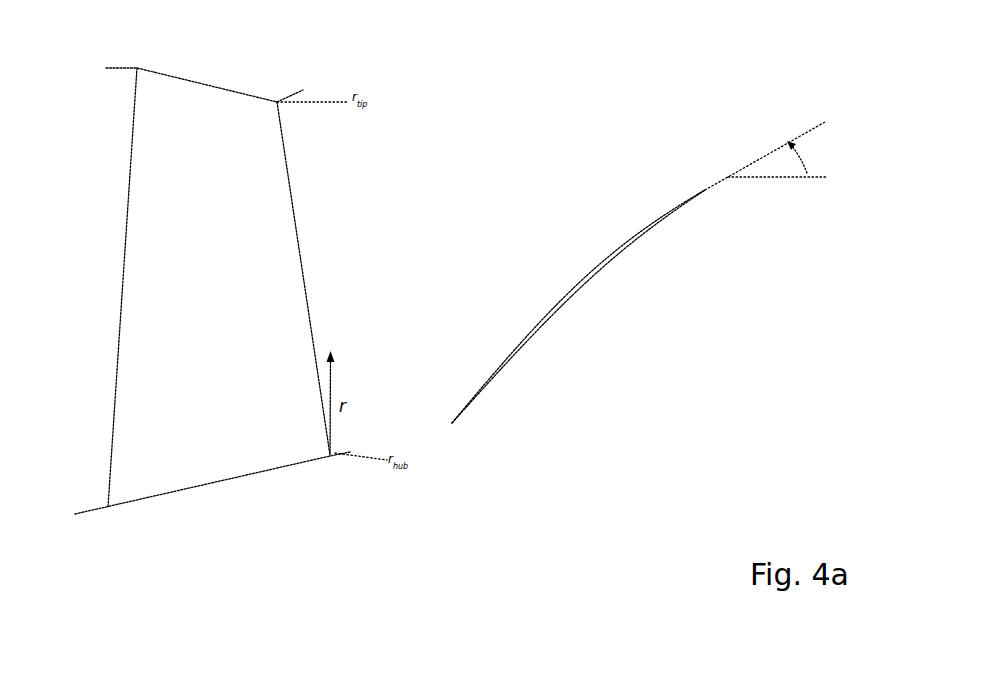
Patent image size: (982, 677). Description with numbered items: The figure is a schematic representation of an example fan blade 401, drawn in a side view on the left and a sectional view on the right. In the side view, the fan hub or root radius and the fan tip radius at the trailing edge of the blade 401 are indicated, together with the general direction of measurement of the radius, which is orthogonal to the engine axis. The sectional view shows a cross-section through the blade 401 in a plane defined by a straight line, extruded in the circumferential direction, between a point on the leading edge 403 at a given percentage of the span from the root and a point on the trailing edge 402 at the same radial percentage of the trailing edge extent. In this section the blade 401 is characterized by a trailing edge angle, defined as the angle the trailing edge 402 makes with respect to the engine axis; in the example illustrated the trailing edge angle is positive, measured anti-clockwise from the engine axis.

The fan blade 401 is at (567, 293).
The trailing edge 402 is at (705, 190).
The leading edge 403 is at (452, 423).